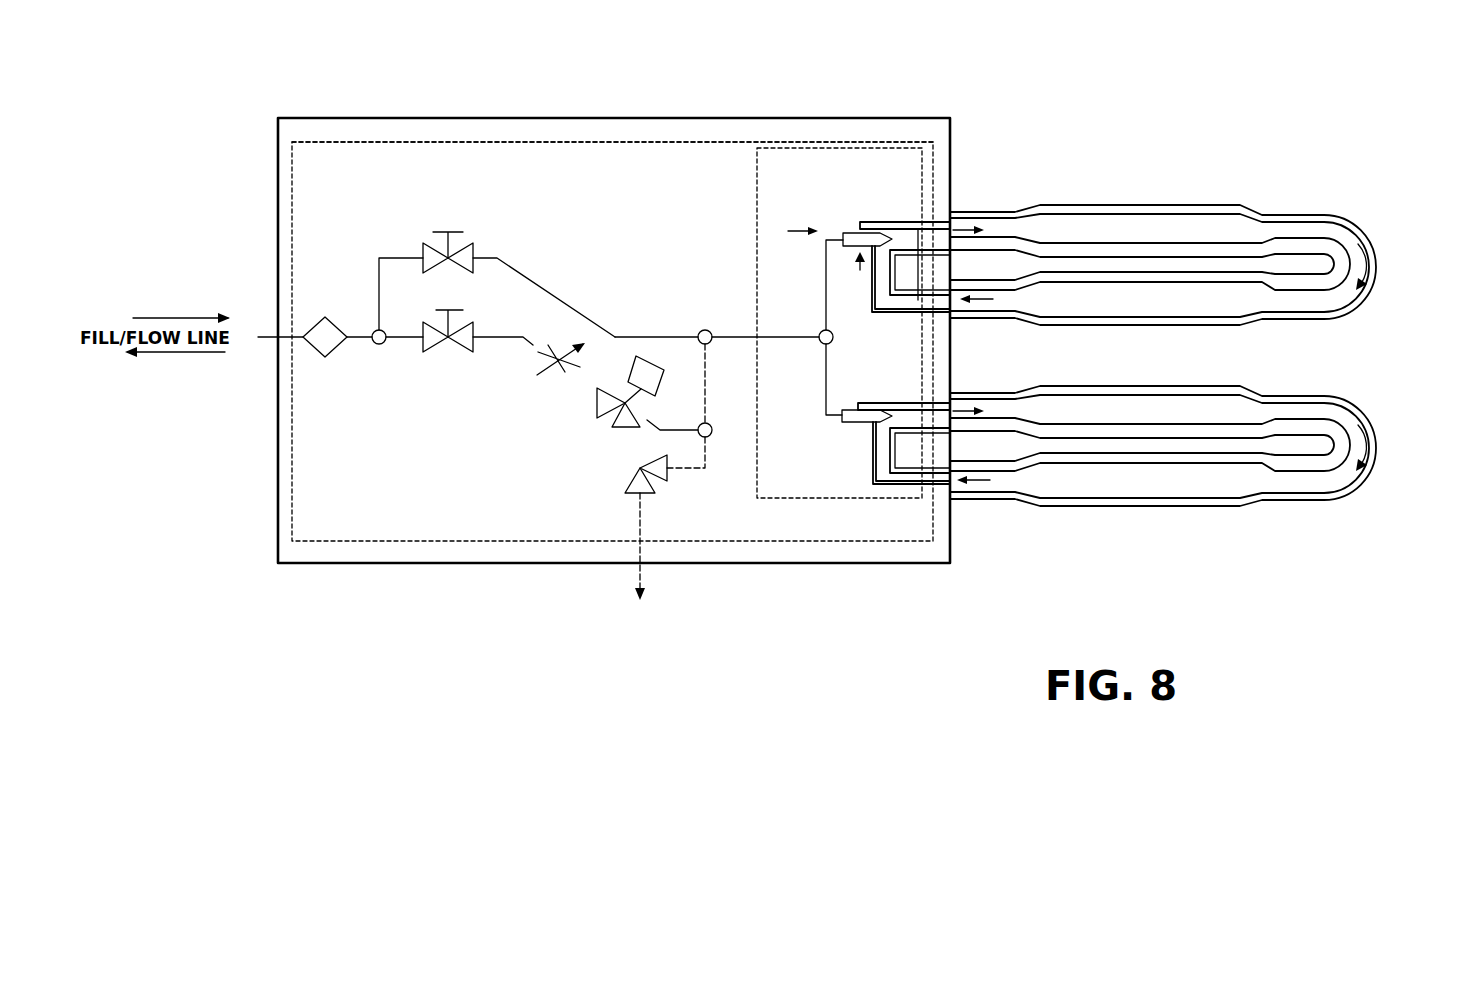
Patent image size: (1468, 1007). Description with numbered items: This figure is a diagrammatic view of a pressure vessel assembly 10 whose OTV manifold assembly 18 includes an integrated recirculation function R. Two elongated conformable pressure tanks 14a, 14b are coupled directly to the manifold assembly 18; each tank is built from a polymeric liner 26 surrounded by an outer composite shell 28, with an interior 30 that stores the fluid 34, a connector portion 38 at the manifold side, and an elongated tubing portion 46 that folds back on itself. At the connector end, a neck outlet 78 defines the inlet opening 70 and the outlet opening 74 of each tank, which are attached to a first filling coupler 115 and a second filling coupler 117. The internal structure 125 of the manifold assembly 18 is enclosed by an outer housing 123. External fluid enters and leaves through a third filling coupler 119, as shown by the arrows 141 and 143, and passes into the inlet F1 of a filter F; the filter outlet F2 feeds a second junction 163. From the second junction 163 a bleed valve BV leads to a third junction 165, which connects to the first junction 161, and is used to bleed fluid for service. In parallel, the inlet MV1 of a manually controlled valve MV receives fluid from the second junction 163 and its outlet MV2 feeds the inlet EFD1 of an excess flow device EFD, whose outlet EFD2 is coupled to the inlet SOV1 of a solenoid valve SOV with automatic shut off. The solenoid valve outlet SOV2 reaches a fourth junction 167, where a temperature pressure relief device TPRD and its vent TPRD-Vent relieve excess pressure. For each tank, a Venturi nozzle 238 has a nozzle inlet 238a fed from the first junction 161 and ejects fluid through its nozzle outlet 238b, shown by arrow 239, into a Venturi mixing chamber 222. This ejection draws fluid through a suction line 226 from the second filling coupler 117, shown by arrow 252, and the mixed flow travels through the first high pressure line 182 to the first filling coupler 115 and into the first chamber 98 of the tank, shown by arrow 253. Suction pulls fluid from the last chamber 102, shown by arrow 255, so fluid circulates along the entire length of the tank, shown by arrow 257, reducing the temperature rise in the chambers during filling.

The pressure vessel assembly 10 is at (435, 100).
The elongated conformable pressure tank 14a is at (1197, 235).
The elongated conformable pressure tank 14b is at (1075, 388).
The OTV manifold assembly 18 is at (623, 118).
The polymeric liner 26 is at (1150, 205).
The outer composite shell 28 is at (1208, 212).
The interior 30 is at (1172, 229).
The fluid 34 is at (1192, 299).
The connector portion 38 is at (1388, 268).
The tubing portion 46 is at (1128, 313).
The inlet opening 70 is at (968, 210).
The outlet opening 74 is at (1050, 228).
The neck outlet 78 is at (990, 213).
The first chamber 98 is at (1248, 212).
The last chamber 102 is at (1242, 300).
The first filling coupler 115 is at (945, 225).
The second filling coupler 117 is at (920, 300).
The third filling coupler 119 is at (265, 338).
The outer housing 123 is at (693, 142).
The internal structure 125 is at (535, 142).
The arrow 141 is at (176, 316).
The arrow 143 is at (180, 354).
The first junction 161 is at (819, 340).
The second junction 163 is at (375, 345).
The third junction 165 is at (705, 330).
The fourth junction 167 is at (712, 437).
The first high pressure line 182 is at (918, 228).
The Venturi mixing chamber 222 is at (887, 224).
The suction line 226 is at (876, 300).
The Venturi nozzle 238 is at (862, 237).
The nozzle inlet 238a is at (843, 242).
The nozzle outlet 238b is at (860, 236).
The arrow 239 is at (780, 230).
The arrow 252 is at (855, 257).
The arrow 253 is at (1022, 210).
The arrow 255 is at (1038, 310).
The arrow 257 is at (1370, 240).
The recirculation function R is at (790, 148).
The filter F is at (325, 318).
The filter inlet F1 is at (310, 330).
The filter outlet F2 is at (345, 330).
The manually controlled valve MV is at (440, 352).
The manually controlled valve inlet MV1 is at (423, 330).
The manually controlled valve outlet MV2 is at (473, 330).
The bleed valve BV is at (428, 245).
The excess flow device EFD is at (545, 374).
The excess flow device inlet EFD1 is at (533, 340).
The excess flow device outlet EFD2 is at (585, 373).
The solenoid valve SOV is at (618, 425).
The solenoid valve inlet SOV1 is at (595, 393).
The solenoid valve outlet SOV2 is at (627, 463).
The temperature pressure relief device TPRD is at (672, 480).
The temperature pressure relief device vent TPRD-Vent is at (675, 614).